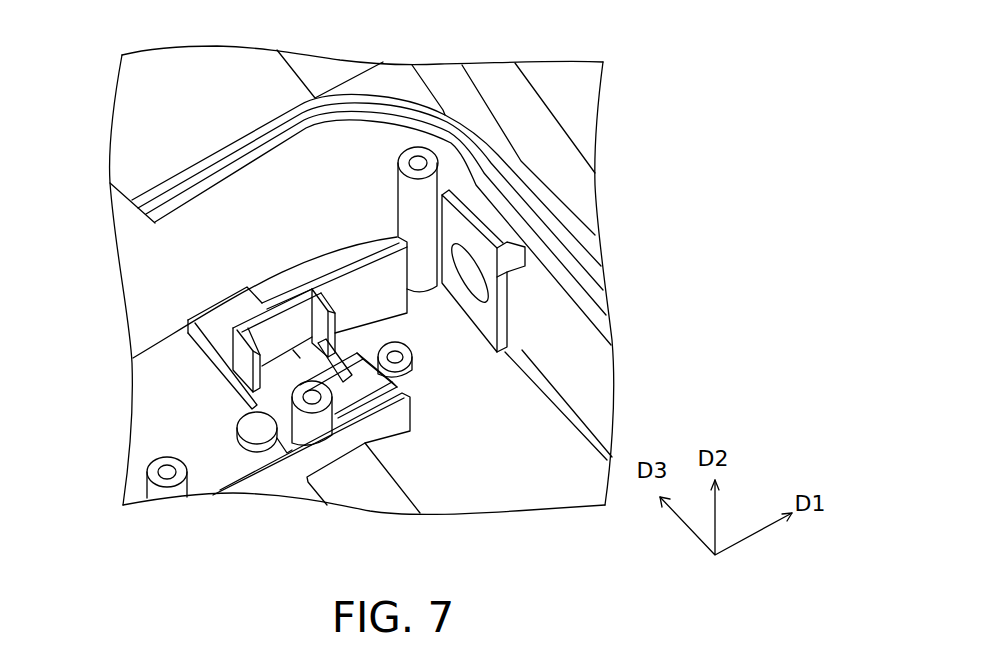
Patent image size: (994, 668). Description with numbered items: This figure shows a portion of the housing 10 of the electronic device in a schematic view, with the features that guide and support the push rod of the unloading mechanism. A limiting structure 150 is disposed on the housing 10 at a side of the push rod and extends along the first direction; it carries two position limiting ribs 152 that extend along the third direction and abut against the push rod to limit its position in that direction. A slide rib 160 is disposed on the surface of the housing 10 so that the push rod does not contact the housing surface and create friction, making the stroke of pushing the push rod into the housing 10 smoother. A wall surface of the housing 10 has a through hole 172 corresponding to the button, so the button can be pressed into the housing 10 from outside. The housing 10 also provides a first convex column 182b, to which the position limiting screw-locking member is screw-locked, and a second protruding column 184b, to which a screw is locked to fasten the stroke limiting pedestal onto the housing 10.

The housing 10 is at (558, 145).
The limiting structure 150 is at (380, 249).
The position limiting rib 152 is at (238, 331).
The slide rib 160 is at (376, 392).
The through hole 172 is at (483, 287).
The first convex column 182b is at (398, 355).
The second protruding column 184b is at (152, 470).